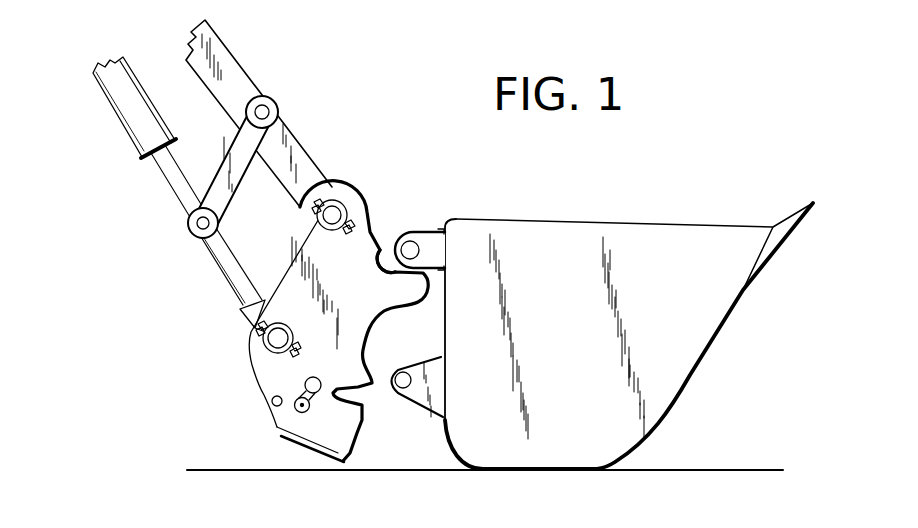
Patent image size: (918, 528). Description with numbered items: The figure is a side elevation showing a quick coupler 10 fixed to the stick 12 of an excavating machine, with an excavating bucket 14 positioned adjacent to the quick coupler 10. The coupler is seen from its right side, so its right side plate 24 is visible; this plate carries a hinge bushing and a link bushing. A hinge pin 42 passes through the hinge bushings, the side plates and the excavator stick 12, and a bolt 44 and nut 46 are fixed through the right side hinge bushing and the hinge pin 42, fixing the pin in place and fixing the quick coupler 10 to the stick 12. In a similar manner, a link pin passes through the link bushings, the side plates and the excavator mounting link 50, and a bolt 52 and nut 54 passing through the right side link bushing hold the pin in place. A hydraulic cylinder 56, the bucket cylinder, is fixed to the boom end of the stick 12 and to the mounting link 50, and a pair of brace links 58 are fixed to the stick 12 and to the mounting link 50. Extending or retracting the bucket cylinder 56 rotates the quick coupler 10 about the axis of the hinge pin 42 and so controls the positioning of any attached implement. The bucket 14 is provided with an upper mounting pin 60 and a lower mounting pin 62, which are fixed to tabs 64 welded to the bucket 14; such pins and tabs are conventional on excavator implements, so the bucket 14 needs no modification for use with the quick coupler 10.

The quick coupler 10 is at (240, 385).
The stick 12 is at (220, 42).
The excavating bucket 14 is at (635, 205).
The right side plate 24 is at (250, 357).
The hinge pin 42 is at (337, 200).
The bolt 44 is at (300, 210).
The nut 46 is at (357, 222).
The excavator mounting link 50 is at (223, 273).
The bolt 52 is at (255, 327).
The nut 54 is at (272, 378).
The hydraulic cylinder 56 is at (125, 128).
The brace links 58 is at (278, 97).
The upper mounting pin 60 is at (364, 265).
The lower mounting pin 62 is at (405, 370).
The tabs 64 is at (422, 232).